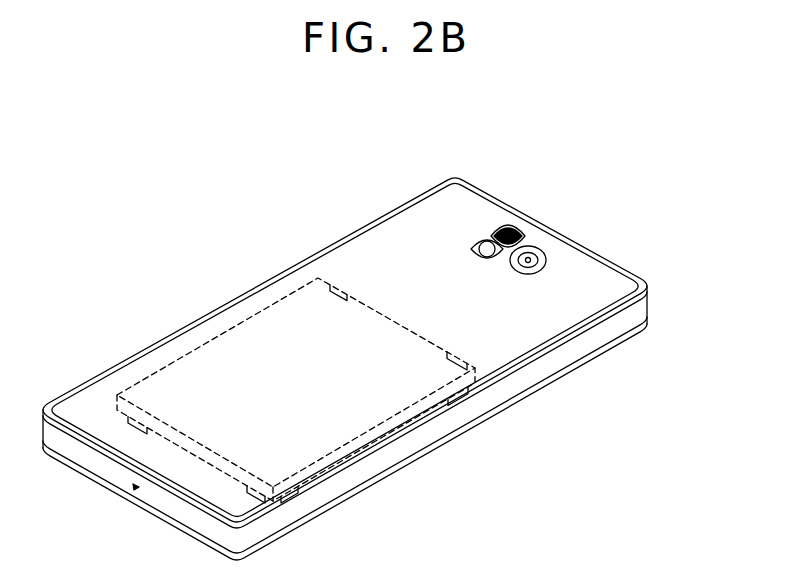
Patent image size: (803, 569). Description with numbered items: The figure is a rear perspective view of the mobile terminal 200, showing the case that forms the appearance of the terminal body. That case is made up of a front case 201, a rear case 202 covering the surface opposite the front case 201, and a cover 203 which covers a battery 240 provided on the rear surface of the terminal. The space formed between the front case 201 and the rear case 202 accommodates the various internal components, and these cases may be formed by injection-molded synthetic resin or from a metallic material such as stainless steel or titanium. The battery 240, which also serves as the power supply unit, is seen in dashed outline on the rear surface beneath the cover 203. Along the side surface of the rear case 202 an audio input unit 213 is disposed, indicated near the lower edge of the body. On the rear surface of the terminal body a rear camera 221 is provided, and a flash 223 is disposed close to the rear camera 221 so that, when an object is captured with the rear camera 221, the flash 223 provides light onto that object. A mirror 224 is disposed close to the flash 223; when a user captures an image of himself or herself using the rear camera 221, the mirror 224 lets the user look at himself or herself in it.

The mobile terminal 200 is at (378, 369).
The front case 201 is at (641, 331).
The rear case 202 is at (640, 310).
The cover 203 is at (648, 287).
The battery 240 is at (283, 300).
The audio input unit 213 is at (133, 488).
The rear camera 221 is at (532, 257).
The flash 223 is at (510, 229).
The mirror 224 is at (487, 240).